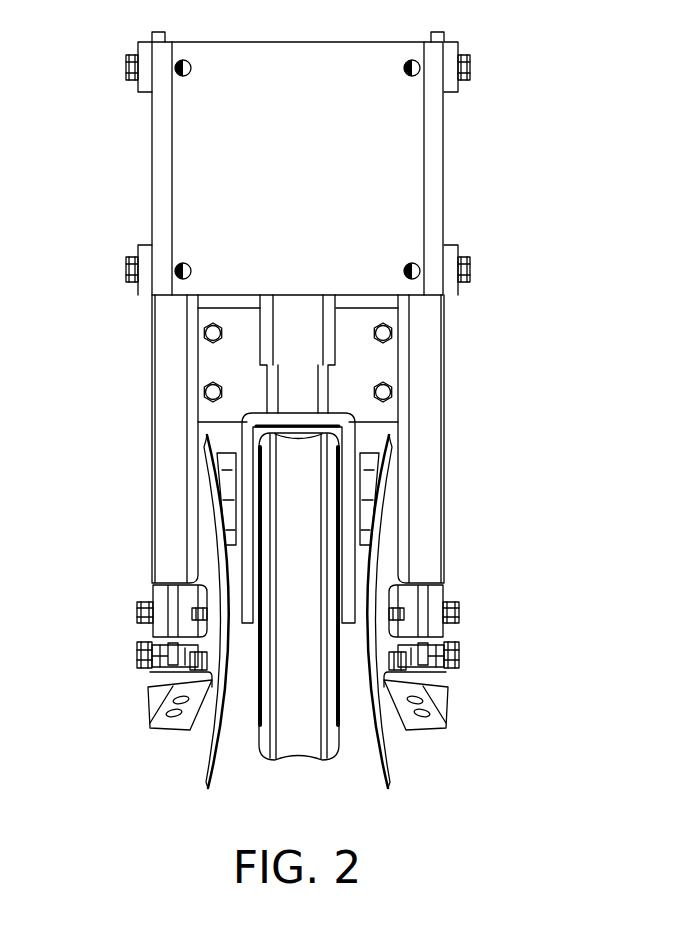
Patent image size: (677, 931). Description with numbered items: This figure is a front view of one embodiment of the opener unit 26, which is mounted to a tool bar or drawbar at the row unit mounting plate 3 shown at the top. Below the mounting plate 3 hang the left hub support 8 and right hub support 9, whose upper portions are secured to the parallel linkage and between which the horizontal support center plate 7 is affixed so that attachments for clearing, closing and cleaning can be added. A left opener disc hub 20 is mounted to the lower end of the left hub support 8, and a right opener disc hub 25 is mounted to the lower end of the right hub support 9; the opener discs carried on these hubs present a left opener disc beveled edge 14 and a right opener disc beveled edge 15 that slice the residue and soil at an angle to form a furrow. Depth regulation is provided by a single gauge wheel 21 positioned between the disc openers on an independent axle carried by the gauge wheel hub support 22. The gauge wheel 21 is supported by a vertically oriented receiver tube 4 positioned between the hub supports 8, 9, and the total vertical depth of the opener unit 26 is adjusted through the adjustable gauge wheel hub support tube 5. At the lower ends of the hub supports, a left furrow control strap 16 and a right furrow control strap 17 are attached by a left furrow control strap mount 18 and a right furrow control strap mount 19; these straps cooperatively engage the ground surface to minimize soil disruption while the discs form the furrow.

The mounting plate 3 is at (205, 168).
The receiver tube 4 is at (259, 318).
The adjustable gauge wheel hub support tube 5 is at (270, 374).
The horizontal support center plate 7 is at (371, 356).
The left hub support 8 is at (432, 100).
The right hub support 9 is at (152, 120).
The left opener disc beveled edge 14 is at (391, 781).
The right opener disc beveled edge 15 is at (206, 782).
The left furrow control strap 16 is at (442, 712).
The right furrow control strap 17 is at (155, 714).
The left furrow control strap mount 18 is at (446, 676).
The right furrow control strap mount 19 is at (150, 683).
The left opener disc hub 20 is at (405, 598).
The gauge wheel 21 is at (293, 746).
The gauge wheel hub support 22 is at (245, 417).
The right opener disc hub 25 is at (190, 593).
The opener unit 26 is at (586, 121).